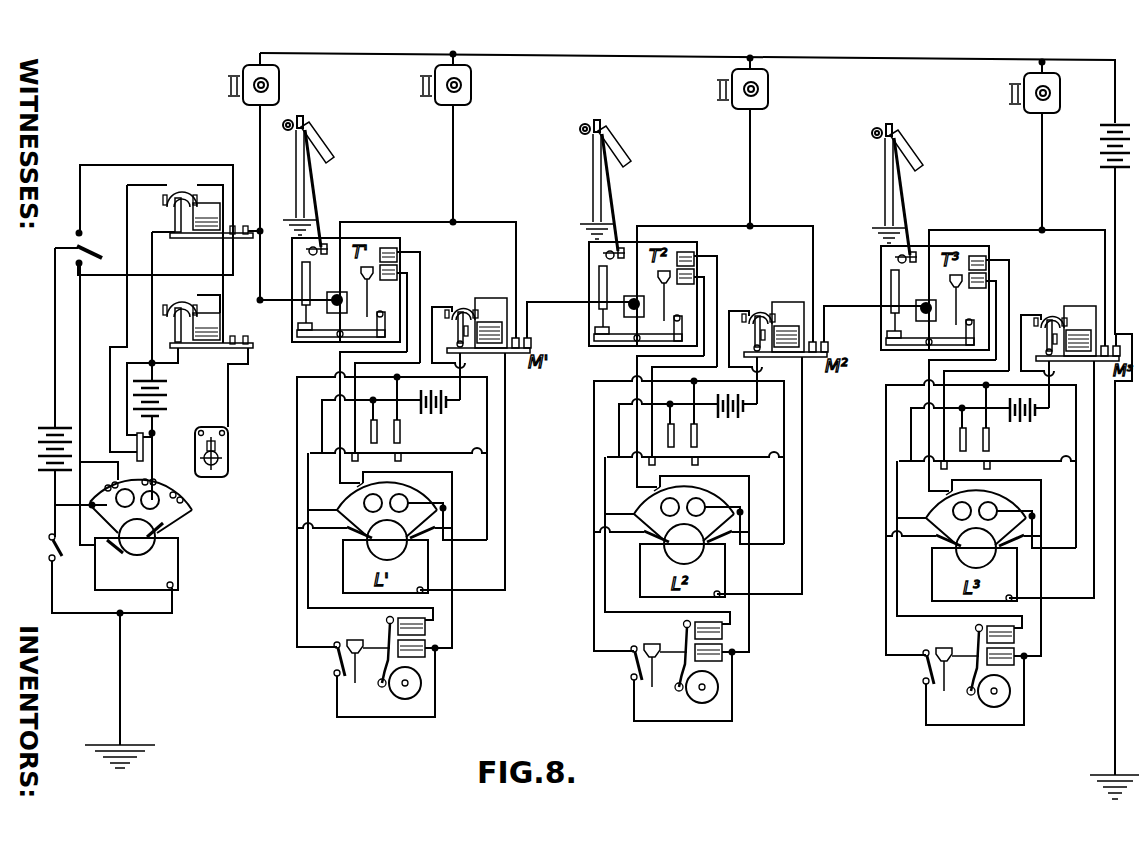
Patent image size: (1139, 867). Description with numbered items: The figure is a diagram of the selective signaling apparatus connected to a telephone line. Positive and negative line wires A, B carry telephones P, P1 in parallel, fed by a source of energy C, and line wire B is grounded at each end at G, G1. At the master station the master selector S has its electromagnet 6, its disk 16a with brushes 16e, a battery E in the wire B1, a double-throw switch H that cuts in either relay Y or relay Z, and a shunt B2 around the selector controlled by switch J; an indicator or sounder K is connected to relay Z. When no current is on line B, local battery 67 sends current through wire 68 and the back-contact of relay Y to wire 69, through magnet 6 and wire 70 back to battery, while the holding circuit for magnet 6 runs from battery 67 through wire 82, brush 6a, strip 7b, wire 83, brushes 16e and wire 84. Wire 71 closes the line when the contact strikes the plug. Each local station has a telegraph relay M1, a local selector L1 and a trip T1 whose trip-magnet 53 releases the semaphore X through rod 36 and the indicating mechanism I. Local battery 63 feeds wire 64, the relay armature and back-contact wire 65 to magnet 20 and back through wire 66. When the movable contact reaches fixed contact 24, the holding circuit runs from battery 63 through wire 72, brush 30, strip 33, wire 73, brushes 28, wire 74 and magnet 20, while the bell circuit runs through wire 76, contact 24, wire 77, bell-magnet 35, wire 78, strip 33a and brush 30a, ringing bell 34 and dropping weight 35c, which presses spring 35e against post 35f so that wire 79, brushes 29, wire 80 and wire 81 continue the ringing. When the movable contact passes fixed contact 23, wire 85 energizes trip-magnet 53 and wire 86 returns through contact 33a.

The semaphore connecting rod 36 is at (321, 208).
The trip-magnet 53 is at (398, 250).
The wire 86 is at (421, 274).
The wire 85 is at (340, 368).
The back-contact wire 65 is at (438, 307).
The wire 64 is at (465, 362).
The wire 72 is at (462, 397).
The local battery 63 is at (437, 413).
The brush 30 is at (400, 426).
The brush 30a is at (378, 443).
The metal strip 33 is at (401, 458).
The metal strip 33a is at (354, 464).
The wire 73 is at (472, 452).
The wire 66 is at (325, 408).
The wire 79 is at (297, 409).
The wire 80 is at (297, 572).
The electromagnet 20 is at (407, 500).
The fixed contact 23 is at (337, 508).
The fixed contact 24 is at (387, 508).
The brushes 29 is at (348, 530).
The wire 74 is at (452, 528).
The twin brushes 28 is at (402, 546).
The wire 78 is at (308, 592).
The wire 76 is at (495, 594).
The wire 77 is at (455, 620).
The make-and-break electromagnet 35 is at (425, 630).
The weight 35c is at (356, 640).
The spring 35e is at (333, 653).
The button 35f is at (334, 676).
The bell 34 is at (408, 699).
The wire 81 is at (388, 720).
The wire 68 is at (152, 322).
The wire 69 is at (115, 347).
The wire 82 is at (125, 395).
The local battery 67 is at (162, 408).
The metal strip 7b is at (137, 442).
The brush 6a is at (152, 437).
The wire 70 is at (153, 458).
The wire 83 is at (103, 462).
The wire 84 is at (95, 486).
The wire 71 is at (68, 505).
The electromagnet 6 is at (160, 515).
The brushes 16e is at (107, 550).
The disk 16a is at (150, 545).
The telephone P is at (263, 176).
The telephone P1 is at (457, 138).
The semaphore X is at (309, 175).
The negative line wire B is at (412, 222).
The trip mechanism T1 is at (346, 290).
The indicating mechanism I is at (333, 305).
The telegraph relay M1 is at (519, 350).
The local selector L1 is at (385, 566).
The source of energy C is at (1105, 146).
The ground G1 is at (1112, 775).
The positive line wire A is at (592, 57).
The double-throw switch H is at (155, 220).
The wire B1 is at (55, 332).
The shunt B2 is at (52, 602).
The battery E is at (43, 482).
The switch J is at (96, 574).
The ground G is at (120, 690).
The relay Y is at (205, 233).
The relay Z is at (205, 348).
The sounder K is at (228, 452).
The master selector S is at (136, 554).